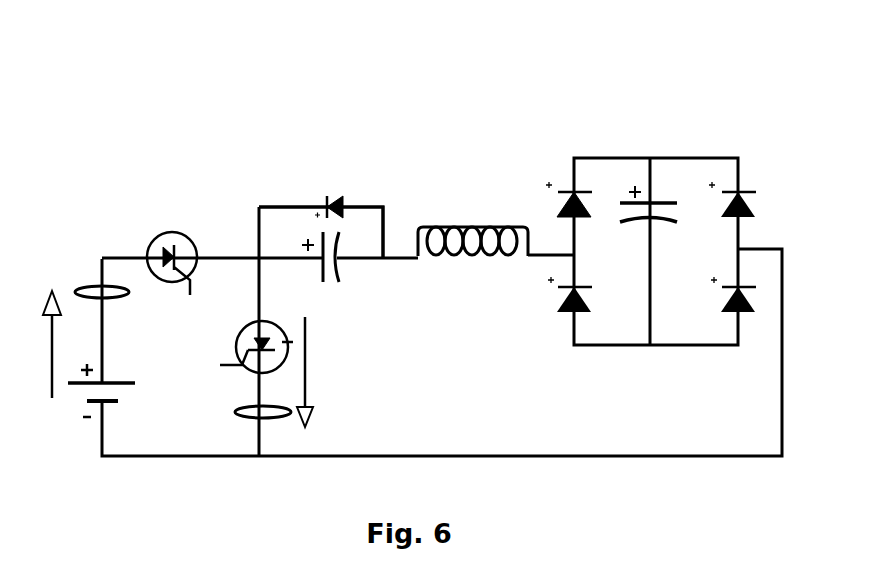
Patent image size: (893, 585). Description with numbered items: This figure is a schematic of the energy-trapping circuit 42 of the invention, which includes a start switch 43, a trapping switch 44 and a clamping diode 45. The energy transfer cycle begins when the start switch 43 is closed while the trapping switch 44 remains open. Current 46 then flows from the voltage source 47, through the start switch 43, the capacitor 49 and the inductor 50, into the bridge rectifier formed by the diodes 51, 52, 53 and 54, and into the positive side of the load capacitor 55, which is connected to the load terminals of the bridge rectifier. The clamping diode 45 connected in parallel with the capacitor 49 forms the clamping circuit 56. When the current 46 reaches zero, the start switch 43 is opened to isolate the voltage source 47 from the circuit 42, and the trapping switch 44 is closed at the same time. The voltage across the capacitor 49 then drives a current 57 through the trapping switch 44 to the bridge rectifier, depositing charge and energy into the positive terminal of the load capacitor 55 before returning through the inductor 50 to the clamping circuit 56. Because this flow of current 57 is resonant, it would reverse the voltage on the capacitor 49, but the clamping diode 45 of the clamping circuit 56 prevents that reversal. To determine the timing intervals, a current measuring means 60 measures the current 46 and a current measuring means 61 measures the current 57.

The circuit 42 is at (334, 122).
The start switch 43 is at (162, 287).
The trapping switch 44 is at (239, 324).
The clamping diode 45 is at (329, 192).
The current 46 is at (50, 332).
The voltage source 47 is at (128, 393).
The capacitor 49 is at (350, 276).
The inductor 50 is at (467, 263).
The diode 51 is at (562, 187).
The diode 52 is at (747, 187).
The diode 53 is at (567, 318).
The diode 54 is at (750, 317).
The load capacitor 55 is at (637, 228).
The clamping circuit 56 is at (394, 214).
The current 57 is at (306, 331).
The current measuring means 60 is at (74, 286).
The current measuring means 61 is at (234, 406).